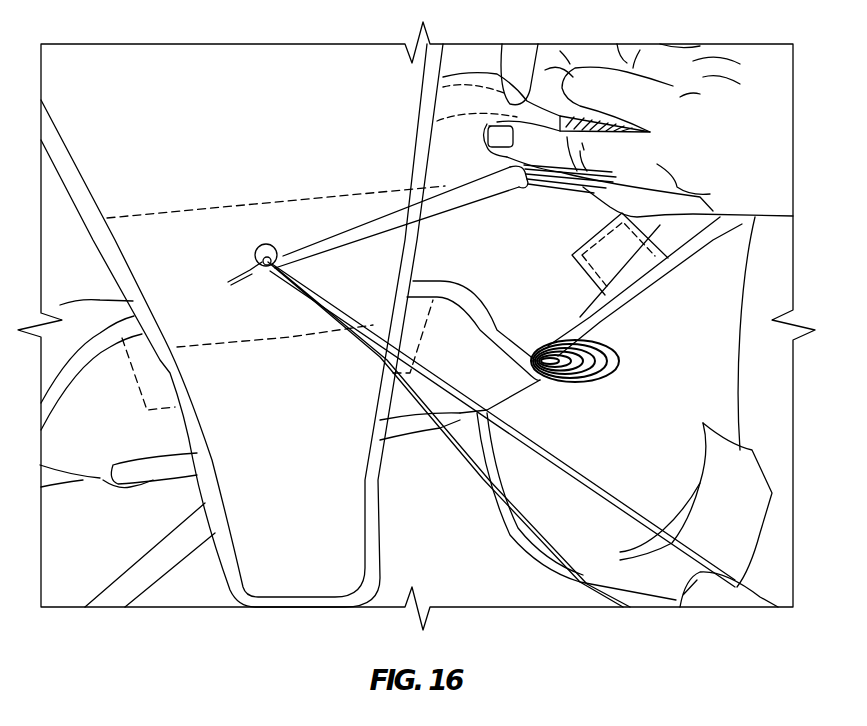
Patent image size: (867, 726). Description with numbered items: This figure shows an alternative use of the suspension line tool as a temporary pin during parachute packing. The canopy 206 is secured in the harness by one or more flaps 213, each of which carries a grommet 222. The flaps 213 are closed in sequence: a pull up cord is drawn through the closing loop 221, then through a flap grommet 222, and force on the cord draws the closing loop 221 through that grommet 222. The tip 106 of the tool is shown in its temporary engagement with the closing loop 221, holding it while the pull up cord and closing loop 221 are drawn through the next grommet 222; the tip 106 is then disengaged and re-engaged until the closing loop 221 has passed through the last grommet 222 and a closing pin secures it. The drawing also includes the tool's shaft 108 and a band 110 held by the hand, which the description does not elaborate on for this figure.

The tip 106 is at (230, 278).
The rod 108 is at (383, 220).
The strap band 110 is at (530, 121).
The canopy 206 is at (530, 300).
The flap 213 is at (252, 373).
The closing loop 221 is at (269, 244).
The grommet 222 is at (260, 247).